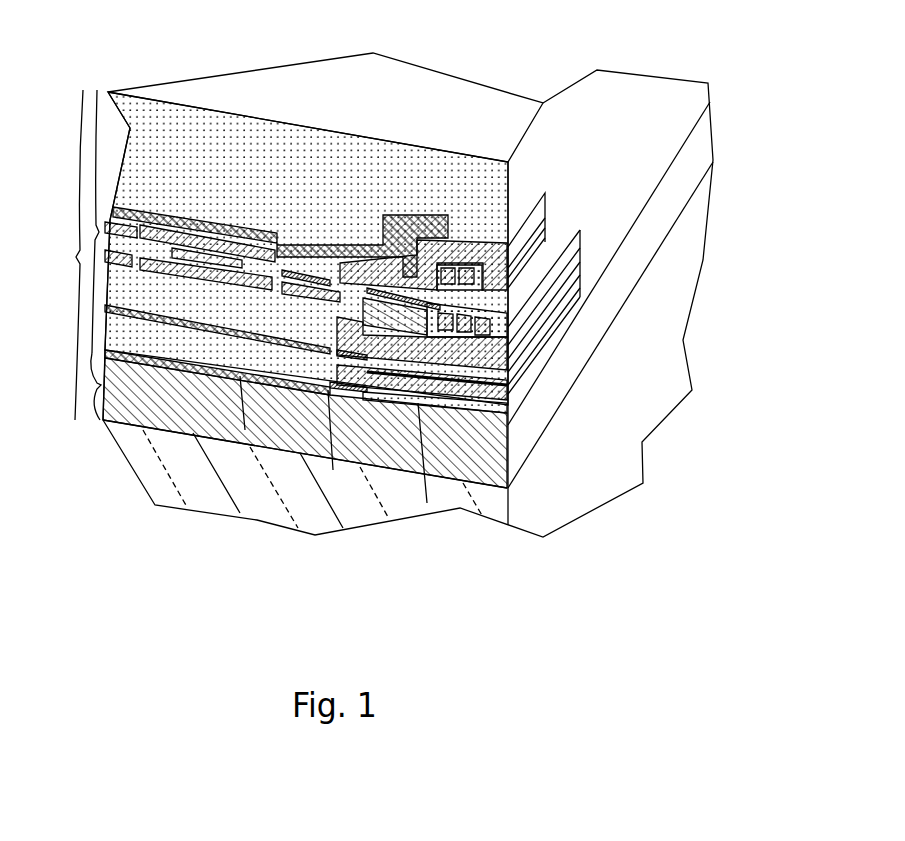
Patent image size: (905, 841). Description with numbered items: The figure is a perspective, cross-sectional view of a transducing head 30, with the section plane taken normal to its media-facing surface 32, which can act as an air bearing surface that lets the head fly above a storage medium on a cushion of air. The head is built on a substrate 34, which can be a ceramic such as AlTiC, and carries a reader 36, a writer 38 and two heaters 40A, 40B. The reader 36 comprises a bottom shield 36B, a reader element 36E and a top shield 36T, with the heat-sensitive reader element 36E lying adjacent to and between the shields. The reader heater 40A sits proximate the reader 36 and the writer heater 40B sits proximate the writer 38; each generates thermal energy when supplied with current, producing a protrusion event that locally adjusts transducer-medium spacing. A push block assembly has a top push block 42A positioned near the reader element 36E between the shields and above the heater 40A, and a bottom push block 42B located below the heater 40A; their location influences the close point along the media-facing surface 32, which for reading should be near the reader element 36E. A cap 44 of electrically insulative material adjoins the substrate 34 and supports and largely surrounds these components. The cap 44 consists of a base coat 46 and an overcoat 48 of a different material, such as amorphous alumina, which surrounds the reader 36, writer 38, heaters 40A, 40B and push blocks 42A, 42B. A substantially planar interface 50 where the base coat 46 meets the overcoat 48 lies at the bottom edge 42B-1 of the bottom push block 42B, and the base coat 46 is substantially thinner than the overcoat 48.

The transducing head 30 is at (517, 77).
The media-facing surface 32 is at (656, 194).
The substrate 34 is at (217, 488).
The reader 36 is at (527, 358).
The top shield 36T is at (547, 297).
The reader element 36E is at (517, 410).
The bottom shield 36B is at (492, 418).
The writer 38 is at (532, 277).
The reader heater 40A is at (333, 470).
The writer heater 40B is at (295, 258).
The top push block 42A is at (170, 335).
The bottom push block 42B is at (190, 372).
The bottom edge of the bottom push block 42B-1 is at (245, 430).
The cap 44 is at (76, 257).
The base coat 46 is at (100, 385).
The overcoat 48 is at (96, 225).
The interface 50 is at (427, 503).